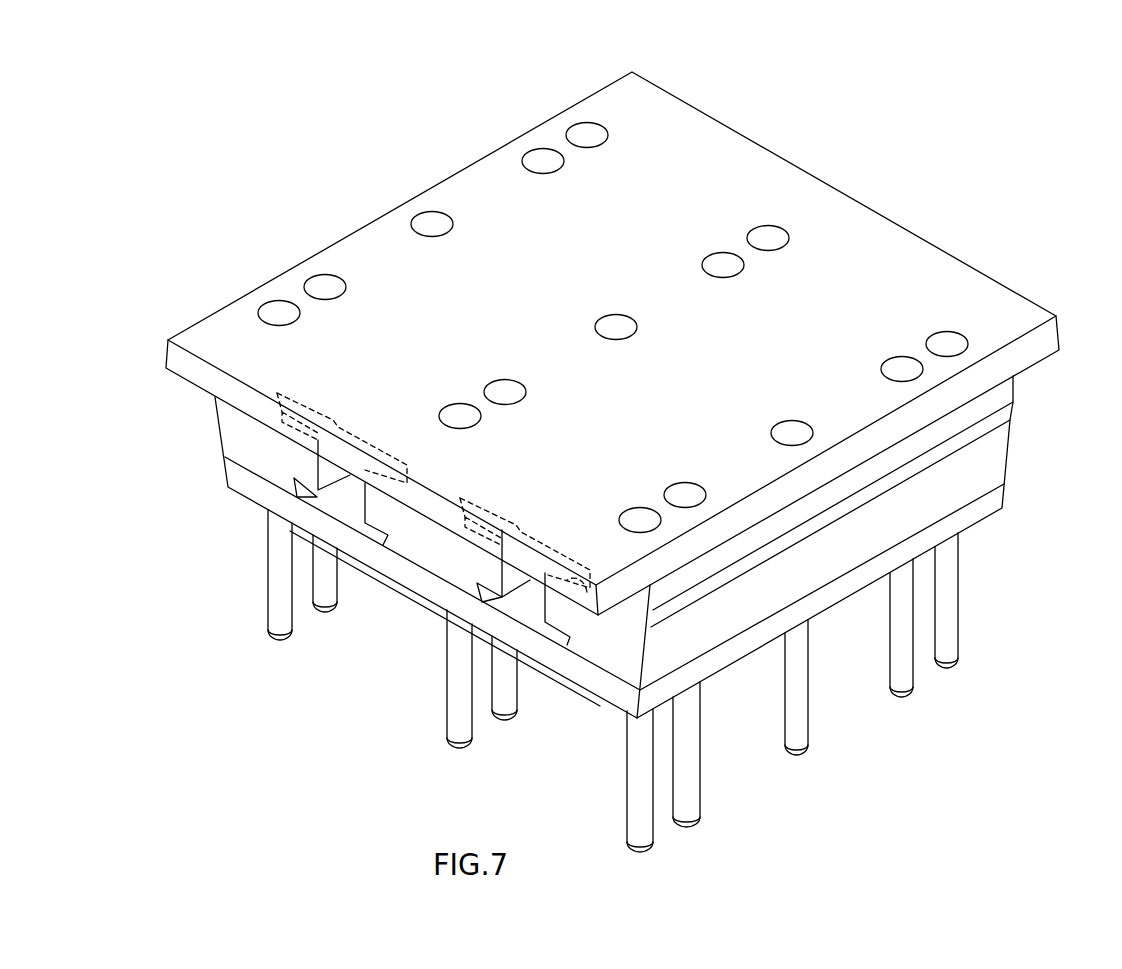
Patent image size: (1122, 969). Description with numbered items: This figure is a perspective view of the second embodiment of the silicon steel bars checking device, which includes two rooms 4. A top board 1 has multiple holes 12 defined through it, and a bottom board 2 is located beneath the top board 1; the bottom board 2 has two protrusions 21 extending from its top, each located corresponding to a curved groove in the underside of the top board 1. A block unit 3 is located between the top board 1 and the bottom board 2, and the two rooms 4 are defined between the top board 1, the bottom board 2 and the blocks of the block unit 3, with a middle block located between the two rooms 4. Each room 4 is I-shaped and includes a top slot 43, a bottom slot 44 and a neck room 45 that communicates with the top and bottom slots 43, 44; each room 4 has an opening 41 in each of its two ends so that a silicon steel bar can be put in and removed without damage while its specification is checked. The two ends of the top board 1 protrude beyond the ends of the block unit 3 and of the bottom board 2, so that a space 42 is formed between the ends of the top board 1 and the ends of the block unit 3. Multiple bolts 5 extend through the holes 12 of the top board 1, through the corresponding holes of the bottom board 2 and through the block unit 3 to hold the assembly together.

The top board 1 is at (935, 287).
The holes 12 is at (777, 230).
The bottom board 2 is at (423, 583).
The protrusion 21 is at (338, 520).
The block unit 3 is at (1019, 457).
The room 4 is at (604, 602).
The opening 41 is at (305, 504).
The space 42 is at (620, 644).
The top slot 43 is at (587, 592).
The bottom slot 44 is at (548, 640).
The neck room 45 is at (533, 602).
The bolts 5 is at (945, 630).